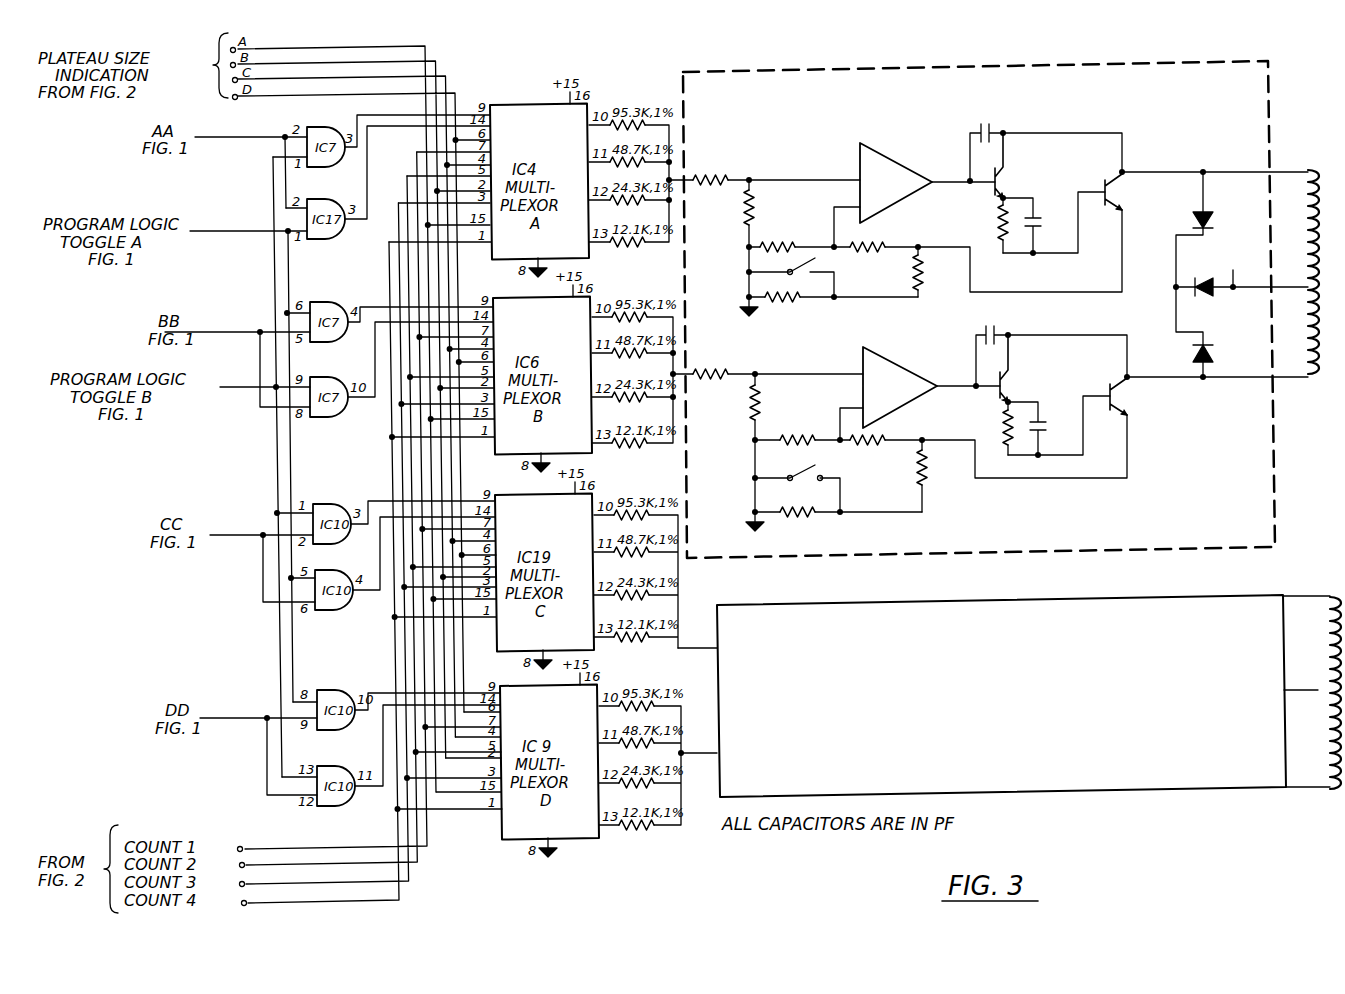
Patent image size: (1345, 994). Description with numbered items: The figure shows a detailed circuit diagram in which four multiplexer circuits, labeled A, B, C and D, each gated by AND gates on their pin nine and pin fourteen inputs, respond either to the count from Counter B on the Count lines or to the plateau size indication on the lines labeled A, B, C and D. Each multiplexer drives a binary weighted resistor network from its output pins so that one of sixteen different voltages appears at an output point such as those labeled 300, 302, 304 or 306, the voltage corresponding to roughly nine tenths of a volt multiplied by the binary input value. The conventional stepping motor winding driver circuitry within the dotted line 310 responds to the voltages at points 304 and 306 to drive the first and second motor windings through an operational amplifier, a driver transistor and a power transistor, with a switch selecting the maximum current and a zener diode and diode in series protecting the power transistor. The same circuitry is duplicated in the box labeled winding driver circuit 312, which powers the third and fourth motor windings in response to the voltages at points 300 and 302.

The output point 300 is at (722, 751).
The output point 302 is at (722, 646).
The output point 304 is at (690, 371).
The output point 306 is at (690, 177).
The dotted line 310 is at (1078, 560).
The winding driver circuit 312 is at (1162, 596).